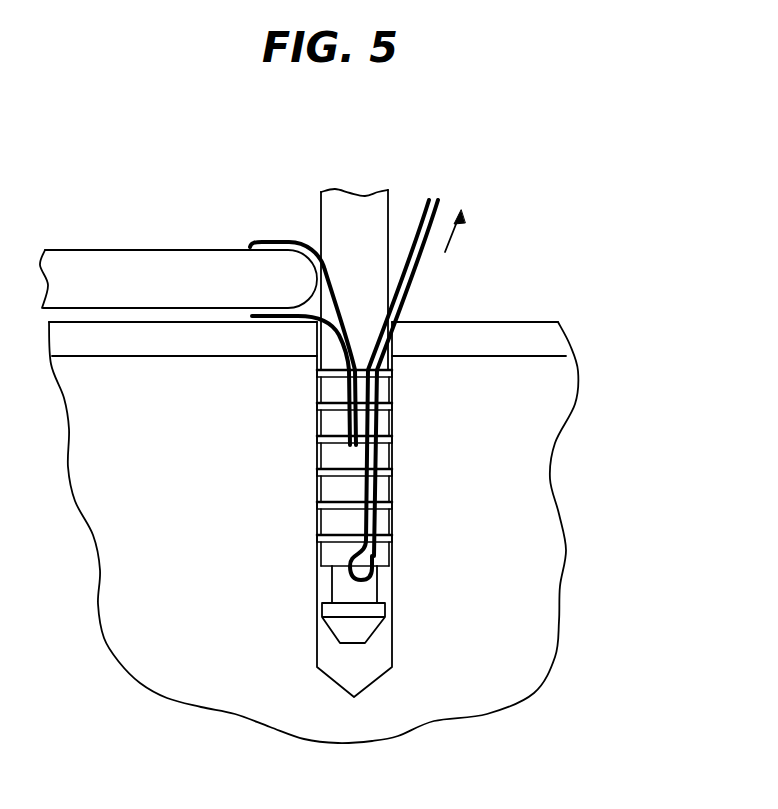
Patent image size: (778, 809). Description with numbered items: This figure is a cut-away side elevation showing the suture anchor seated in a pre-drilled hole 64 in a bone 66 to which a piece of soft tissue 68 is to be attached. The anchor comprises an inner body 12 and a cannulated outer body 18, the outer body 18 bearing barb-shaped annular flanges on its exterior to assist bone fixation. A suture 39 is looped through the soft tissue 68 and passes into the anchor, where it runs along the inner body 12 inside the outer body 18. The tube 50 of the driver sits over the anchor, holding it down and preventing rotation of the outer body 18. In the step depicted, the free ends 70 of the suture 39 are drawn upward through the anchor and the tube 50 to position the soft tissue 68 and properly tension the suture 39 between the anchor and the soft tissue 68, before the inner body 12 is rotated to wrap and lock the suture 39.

The inner body 12 is at (328, 587).
The cannulated outer body 18 is at (316, 457).
The suture 39 is at (293, 240).
The tube 50 is at (388, 207).
The pre-drilled hole 64 is at (380, 645).
The bone 66 is at (541, 410).
The soft tissue 68 is at (168, 267).
The free ends 70 is at (413, 262).